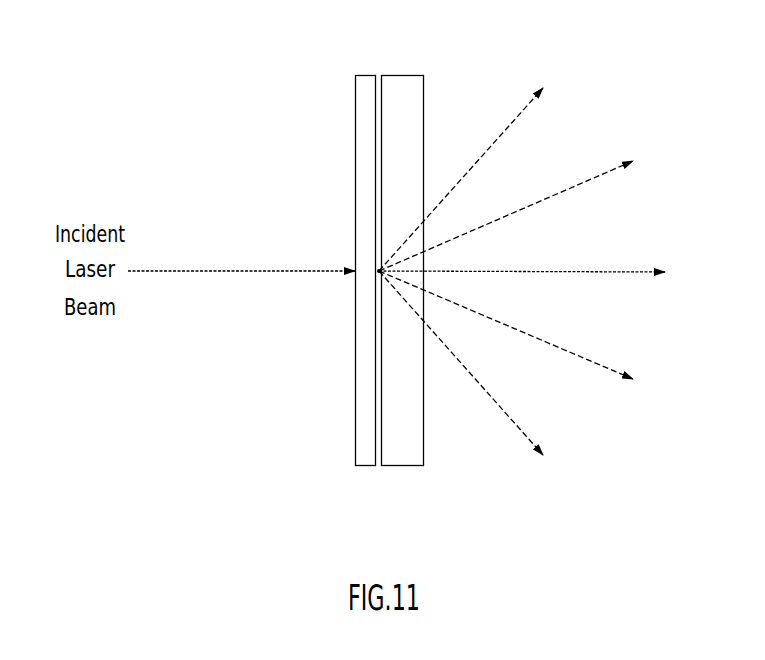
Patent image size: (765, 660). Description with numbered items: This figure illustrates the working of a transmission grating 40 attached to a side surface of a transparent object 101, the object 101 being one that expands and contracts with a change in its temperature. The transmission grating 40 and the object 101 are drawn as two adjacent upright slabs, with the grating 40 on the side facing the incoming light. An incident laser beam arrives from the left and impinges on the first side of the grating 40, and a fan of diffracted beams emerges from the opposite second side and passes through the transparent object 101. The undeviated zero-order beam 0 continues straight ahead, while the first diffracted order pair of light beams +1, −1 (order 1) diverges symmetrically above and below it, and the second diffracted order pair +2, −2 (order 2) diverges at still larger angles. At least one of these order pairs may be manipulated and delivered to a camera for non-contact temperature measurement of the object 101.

The transmission grating 40 is at (365, 466).
The object 101 is at (398, 466).
The zeroth-order diffracted beam 0 is at (533, 272).
The first-order diffracted light beams 1 is at (519, 270).
The second-order diffracted light beams 2 is at (472, 272).